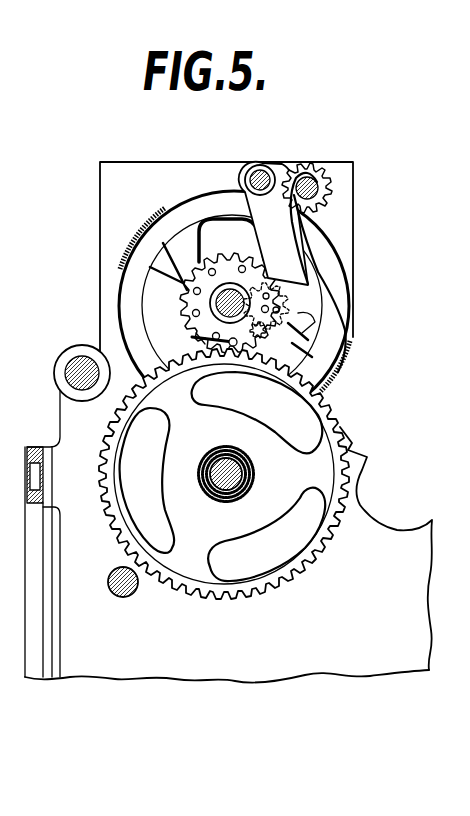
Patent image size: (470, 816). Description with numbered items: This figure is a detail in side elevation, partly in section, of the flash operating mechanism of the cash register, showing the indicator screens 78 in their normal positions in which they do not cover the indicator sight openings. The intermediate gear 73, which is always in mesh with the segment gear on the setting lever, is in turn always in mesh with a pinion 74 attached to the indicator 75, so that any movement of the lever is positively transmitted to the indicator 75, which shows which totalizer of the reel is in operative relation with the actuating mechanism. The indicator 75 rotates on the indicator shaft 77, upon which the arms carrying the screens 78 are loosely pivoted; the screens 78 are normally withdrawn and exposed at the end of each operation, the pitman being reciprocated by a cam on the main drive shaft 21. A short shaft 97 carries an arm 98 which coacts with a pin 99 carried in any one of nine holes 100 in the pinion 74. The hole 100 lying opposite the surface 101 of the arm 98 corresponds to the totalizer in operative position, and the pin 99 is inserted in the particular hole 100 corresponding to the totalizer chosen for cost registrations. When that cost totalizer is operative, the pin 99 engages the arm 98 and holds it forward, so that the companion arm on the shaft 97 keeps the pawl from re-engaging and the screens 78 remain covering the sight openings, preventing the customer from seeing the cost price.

The main drive shaft 21 is at (118, 600).
The intermediate gear 73 is at (333, 462).
The pinion 74 is at (200, 324).
The indicator 75 is at (326, 250).
The indicator shaft 77 is at (212, 302).
The screens 78 is at (142, 228).
The short shaft 97 is at (260, 168).
The arm 98 is at (262, 243).
The pin 99 is at (296, 309).
The holes 100 is at (205, 338).
The surface 101 is at (260, 328).